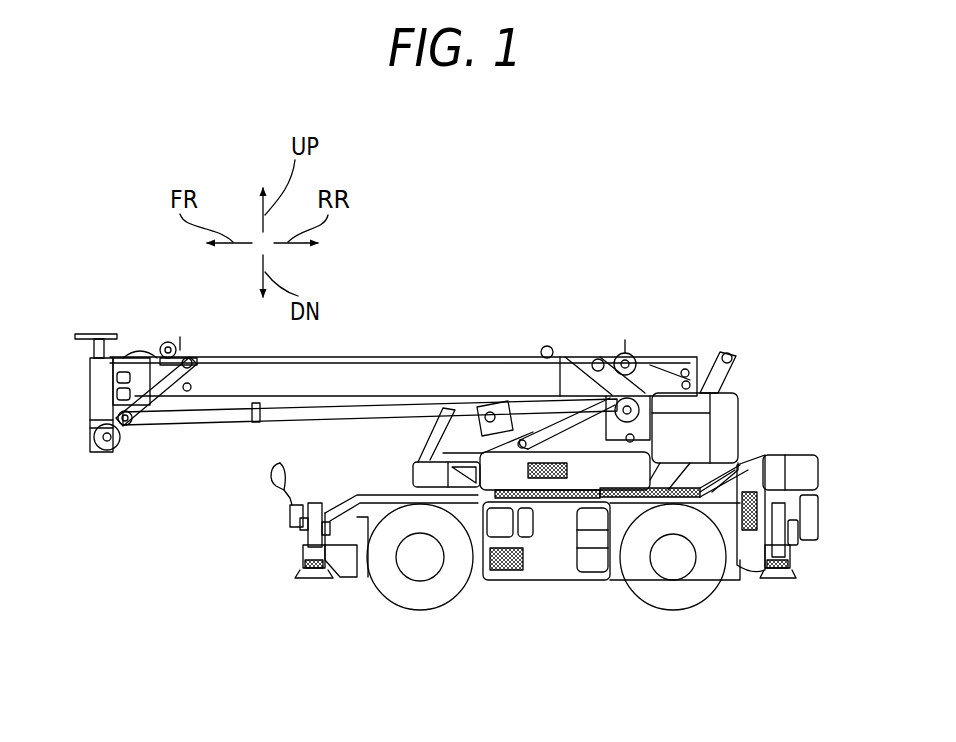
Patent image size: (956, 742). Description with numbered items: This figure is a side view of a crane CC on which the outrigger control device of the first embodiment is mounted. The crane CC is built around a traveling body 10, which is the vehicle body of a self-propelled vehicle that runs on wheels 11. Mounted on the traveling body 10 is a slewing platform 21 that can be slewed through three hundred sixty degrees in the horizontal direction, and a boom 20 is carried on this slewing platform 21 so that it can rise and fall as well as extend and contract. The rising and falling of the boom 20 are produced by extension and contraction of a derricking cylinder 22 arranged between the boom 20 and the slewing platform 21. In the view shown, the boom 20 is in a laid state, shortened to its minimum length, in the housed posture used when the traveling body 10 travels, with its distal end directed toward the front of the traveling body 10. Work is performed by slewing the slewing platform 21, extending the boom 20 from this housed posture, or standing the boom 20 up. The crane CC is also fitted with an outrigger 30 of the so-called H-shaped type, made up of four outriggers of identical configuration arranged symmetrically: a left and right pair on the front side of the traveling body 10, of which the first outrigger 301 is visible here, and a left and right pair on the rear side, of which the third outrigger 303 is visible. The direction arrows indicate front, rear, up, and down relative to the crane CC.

The crane CC is at (623, 313).
The traveling body 10 is at (547, 598).
The wheels 11 is at (428, 606).
The boom 20 is at (466, 352).
The slewing platform 21 is at (633, 470).
The derricking cylinder 22 is at (543, 430).
The outrigger 30 is at (292, 598).
The first outrigger 301 is at (313, 582).
The third outrigger 303 is at (778, 582).